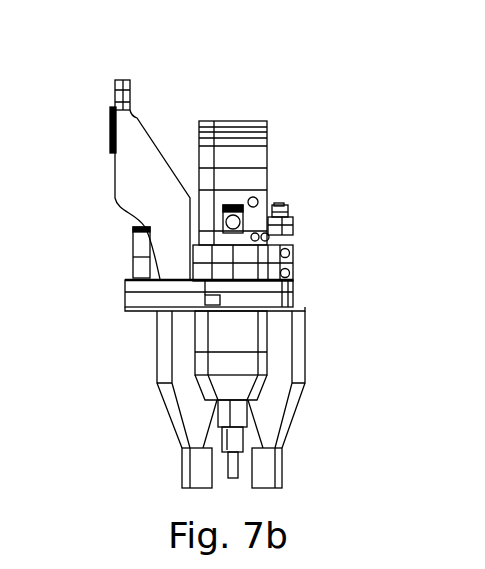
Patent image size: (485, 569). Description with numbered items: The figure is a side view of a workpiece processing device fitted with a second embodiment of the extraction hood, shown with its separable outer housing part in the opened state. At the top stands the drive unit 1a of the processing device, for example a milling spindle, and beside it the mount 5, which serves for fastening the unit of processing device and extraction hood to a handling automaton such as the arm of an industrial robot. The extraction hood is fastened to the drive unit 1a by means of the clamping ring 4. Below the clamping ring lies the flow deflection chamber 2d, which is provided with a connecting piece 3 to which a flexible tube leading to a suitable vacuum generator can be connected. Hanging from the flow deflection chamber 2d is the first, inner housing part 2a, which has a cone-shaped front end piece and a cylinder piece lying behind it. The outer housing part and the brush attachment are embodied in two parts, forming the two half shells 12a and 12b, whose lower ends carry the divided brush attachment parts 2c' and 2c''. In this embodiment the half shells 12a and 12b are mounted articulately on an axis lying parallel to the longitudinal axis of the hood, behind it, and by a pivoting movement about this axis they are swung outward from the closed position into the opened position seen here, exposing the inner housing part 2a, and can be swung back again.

The drive unit 1a is at (268, 137).
The mount 5 is at (136, 117).
The connecting piece 3 is at (143, 237).
The clamping ring 4 is at (291, 253).
The flow deflection chamber 2d is at (292, 290).
The inner housing part 2a is at (193, 345).
The first half shell 12a is at (163, 423).
The second half shell 12b is at (298, 415).
The part of divided brush attachment 2c' is at (157, 477).
The part of divided brush attachment 2c'' is at (313, 481).